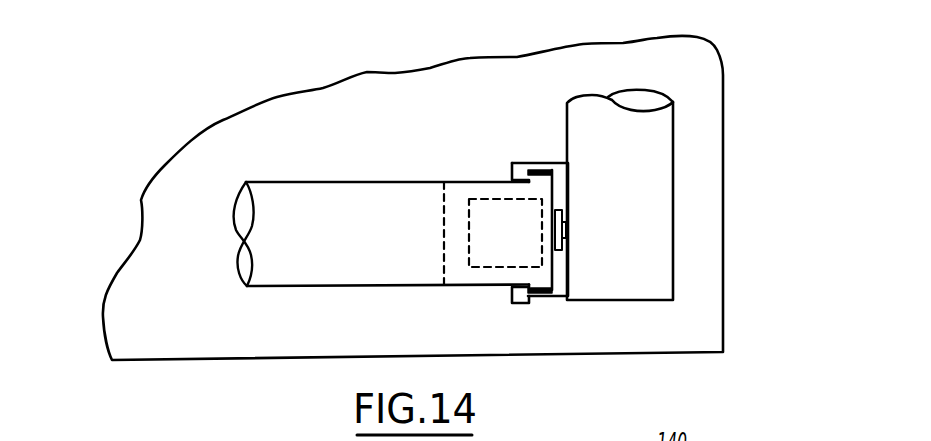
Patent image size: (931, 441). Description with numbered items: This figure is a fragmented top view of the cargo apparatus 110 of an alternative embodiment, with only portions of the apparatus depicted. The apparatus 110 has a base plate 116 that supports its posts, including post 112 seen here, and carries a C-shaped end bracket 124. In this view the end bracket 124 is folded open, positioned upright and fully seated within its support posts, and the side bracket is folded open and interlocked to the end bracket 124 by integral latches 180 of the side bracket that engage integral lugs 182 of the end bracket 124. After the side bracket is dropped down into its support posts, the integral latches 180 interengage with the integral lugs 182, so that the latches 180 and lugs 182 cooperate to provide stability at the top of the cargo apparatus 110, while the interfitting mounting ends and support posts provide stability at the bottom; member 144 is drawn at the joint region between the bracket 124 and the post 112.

The cargo apparatus 110 is at (743, 46).
The post / support member 112 is at (679, 156).
The base plate 116 is at (712, 227).
The end bracket 124 is at (371, 286).
The bracket / receiving member 144 is at (471, 276).
The integral latch 180 is at (527, 162).
The integral lug 182 is at (541, 169).